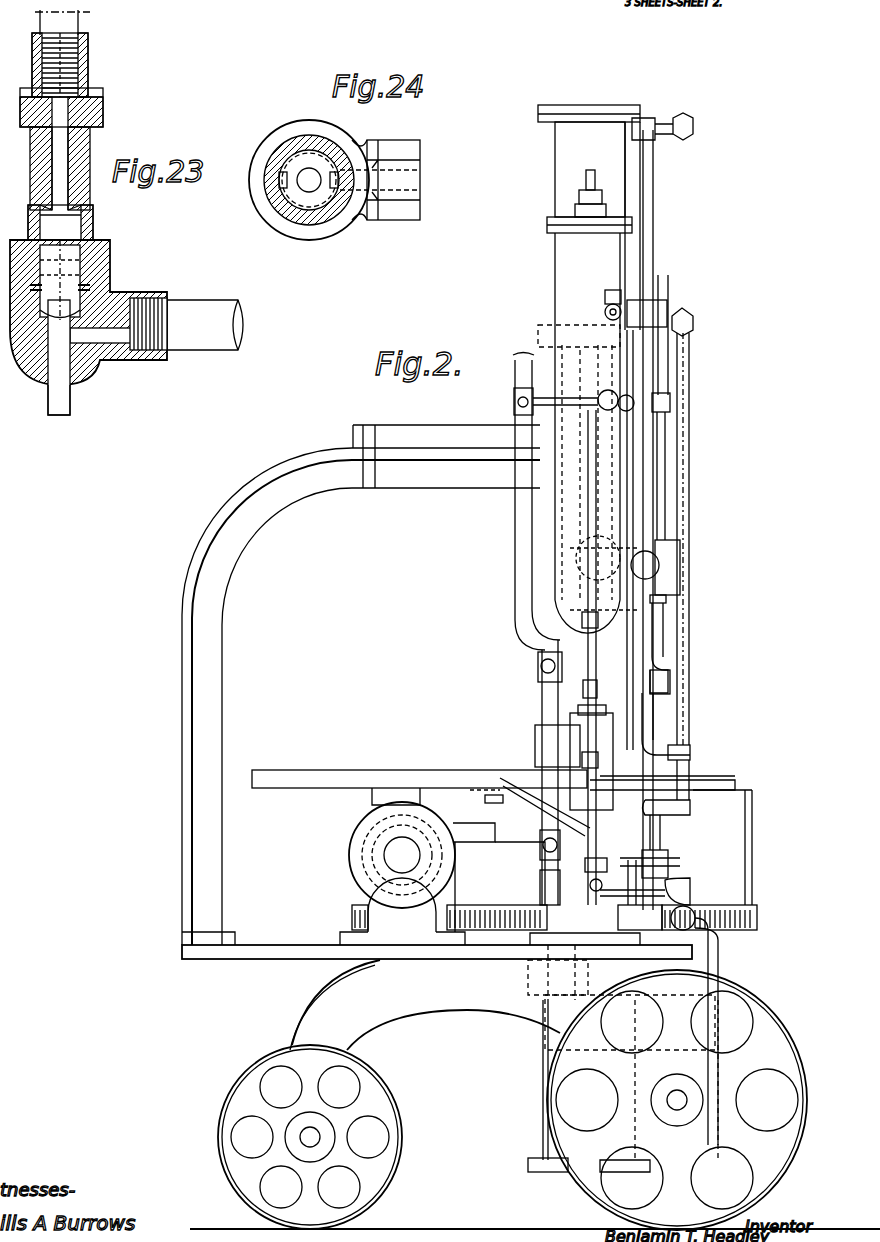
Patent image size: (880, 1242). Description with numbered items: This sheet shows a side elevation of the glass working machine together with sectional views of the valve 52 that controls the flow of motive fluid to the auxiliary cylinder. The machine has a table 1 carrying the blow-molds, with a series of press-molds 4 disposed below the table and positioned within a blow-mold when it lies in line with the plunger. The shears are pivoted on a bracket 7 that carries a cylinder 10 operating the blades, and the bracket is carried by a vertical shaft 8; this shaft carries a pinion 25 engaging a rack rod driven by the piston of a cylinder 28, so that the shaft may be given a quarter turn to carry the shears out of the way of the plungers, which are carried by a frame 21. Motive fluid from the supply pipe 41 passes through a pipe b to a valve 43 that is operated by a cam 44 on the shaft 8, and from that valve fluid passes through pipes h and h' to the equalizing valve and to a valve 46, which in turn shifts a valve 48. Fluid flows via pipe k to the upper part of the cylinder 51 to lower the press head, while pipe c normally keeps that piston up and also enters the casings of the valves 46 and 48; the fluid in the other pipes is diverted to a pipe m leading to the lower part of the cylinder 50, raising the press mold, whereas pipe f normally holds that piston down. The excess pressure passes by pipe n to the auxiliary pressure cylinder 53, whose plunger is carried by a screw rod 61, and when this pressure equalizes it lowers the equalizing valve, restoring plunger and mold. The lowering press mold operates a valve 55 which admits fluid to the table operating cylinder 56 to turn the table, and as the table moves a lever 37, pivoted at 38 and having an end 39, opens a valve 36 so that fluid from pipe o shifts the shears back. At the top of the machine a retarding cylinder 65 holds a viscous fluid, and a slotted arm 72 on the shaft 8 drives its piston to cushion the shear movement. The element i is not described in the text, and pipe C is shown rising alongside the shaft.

In FIG. 23, the valve 52 is at (92, 282).
In FIG. 24, the valve 52 is at (297, 216).
In FIG. 2, the valve 52 is at (601, 874).
In FIG. 2, the cylinder 51 is at (589, 169).
In FIG. 2, the auxiliary pressure cylinder 53 is at (579, 433).
In FIG. 2, the screw rod 61 is at (596, 187).
In FIG. 2, the pipe k is at (653, 186).
In FIG. 2, the cylinder 65 is at (607, 306).
In FIG. 2, the arm 72 is at (668, 310).
In FIG. 2, the pipe C is at (694, 328).
In FIG. 2, the vertical shaft 8 is at (668, 292).
In FIG. 2, the cam 44 is at (671, 405).
In FIG. 2, the pipe h is at (671, 540).
In FIG. 2, the pinion 25 is at (678, 563).
In FIG. 2, the bracket 7 is at (661, 696).
In FIG. 2, the valve 43 is at (605, 412).
In FIG. 2, the pipe b is at (532, 393).
In FIG. 2, the cylinder 28 is at (602, 545).
In FIG. 2, the pipe 41 is at (515, 517).
In FIG. 2, the frame 21 is at (545, 698).
In FIG. 2, the cylinder 10 is at (540, 660).
In FIG. 2, the table 1 is at (406, 770).
In FIG. 2, the pipe n is at (560, 788).
In FIG. 2, the lever 37 is at (502, 805).
In FIG. 2, the pivot 38 is at (540, 826).
In FIG. 2, the table operating cylinder 56 is at (388, 855).
In FIG. 2, the press-molds 4 is at (752, 878).
In FIG. 2, the pipe o is at (690, 810).
In FIG. 2, the valve 36 is at (668, 858).
In FIG. 2, the end 39 is at (682, 857).
In FIG. 2, the valve 46 is at (692, 888).
In FIG. 2, the valve 48 is at (694, 926).
In FIG. 2, the pipe f is at (720, 960).
In FIG. 2, the rod i is at (634, 882).
In FIG. 2, the valve 55 is at (542, 893).
In FIG. 2, the pipe c is at (640, 927).
In FIG. 2, the pipe h' is at (621, 997).
In FIG. 2, the cylinder 50 is at (542, 1040).
In FIG. 2, the pipe m is at (712, 1030).